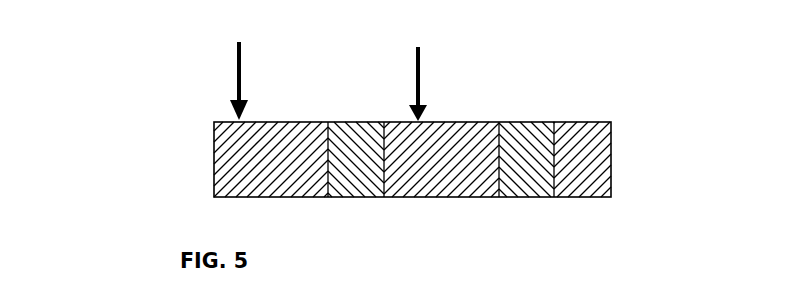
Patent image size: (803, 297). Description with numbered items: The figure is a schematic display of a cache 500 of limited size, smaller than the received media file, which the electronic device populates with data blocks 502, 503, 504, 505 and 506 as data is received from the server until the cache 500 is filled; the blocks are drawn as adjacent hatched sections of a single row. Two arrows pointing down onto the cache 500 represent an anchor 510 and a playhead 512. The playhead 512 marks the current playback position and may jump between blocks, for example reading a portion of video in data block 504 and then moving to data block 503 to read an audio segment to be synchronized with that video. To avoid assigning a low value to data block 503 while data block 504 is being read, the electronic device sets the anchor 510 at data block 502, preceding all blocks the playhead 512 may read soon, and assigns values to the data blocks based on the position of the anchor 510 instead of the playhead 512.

The cache 500 is at (156, 80).
The data block 502 is at (277, 121).
The data block 503 is at (362, 197).
The data block 504 is at (495, 97).
The data block 505 is at (538, 198).
The data block 506 is at (603, 198).
The anchor 510 is at (243, 67).
The playhead 512 is at (420, 73).